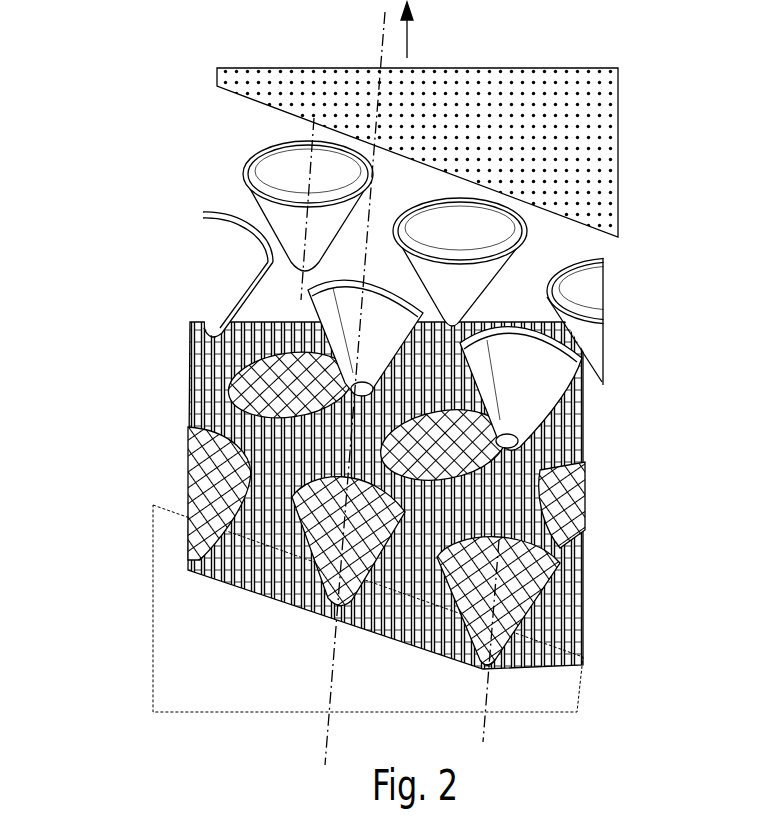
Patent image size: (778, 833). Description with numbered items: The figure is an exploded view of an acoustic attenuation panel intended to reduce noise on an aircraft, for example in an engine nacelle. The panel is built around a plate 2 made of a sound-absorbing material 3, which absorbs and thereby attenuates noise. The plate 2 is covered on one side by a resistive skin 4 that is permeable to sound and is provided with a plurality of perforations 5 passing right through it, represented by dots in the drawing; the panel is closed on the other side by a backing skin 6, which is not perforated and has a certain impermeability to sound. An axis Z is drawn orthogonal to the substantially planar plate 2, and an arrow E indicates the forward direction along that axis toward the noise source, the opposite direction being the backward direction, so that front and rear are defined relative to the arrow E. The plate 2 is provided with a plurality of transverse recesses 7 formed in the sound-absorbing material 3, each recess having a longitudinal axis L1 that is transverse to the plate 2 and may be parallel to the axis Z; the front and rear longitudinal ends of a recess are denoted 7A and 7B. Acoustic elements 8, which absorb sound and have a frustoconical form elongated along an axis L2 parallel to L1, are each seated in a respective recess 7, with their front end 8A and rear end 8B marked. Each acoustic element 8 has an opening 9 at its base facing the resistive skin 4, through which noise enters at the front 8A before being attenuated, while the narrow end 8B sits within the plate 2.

The plate 2 is at (600, 626).
The sound-absorbing material 3 is at (252, 518).
The resistive skin 4 is at (617, 206).
The perforations 5 is at (600, 130).
The backing skin 6 is at (178, 712).
The transverse recesses 7 is at (520, 567).
The front longitudinal end of recess 7A is at (583, 564).
The rear longitudinal end of recess 7B is at (535, 661).
The acoustic elements 8 is at (223, 212).
The front longitudinal end of acoustic element 8A is at (181, 212).
The rear longitudinal end of acoustic element 8B is at (174, 323).
The opening 9 is at (592, 291).
The axis Z is at (380, 47).
The longitudinal axis of recess L1 is at (488, 697).
The longitudinal axis of acoustic element L2 is at (314, 120).
The arrow E is at (407, 30).